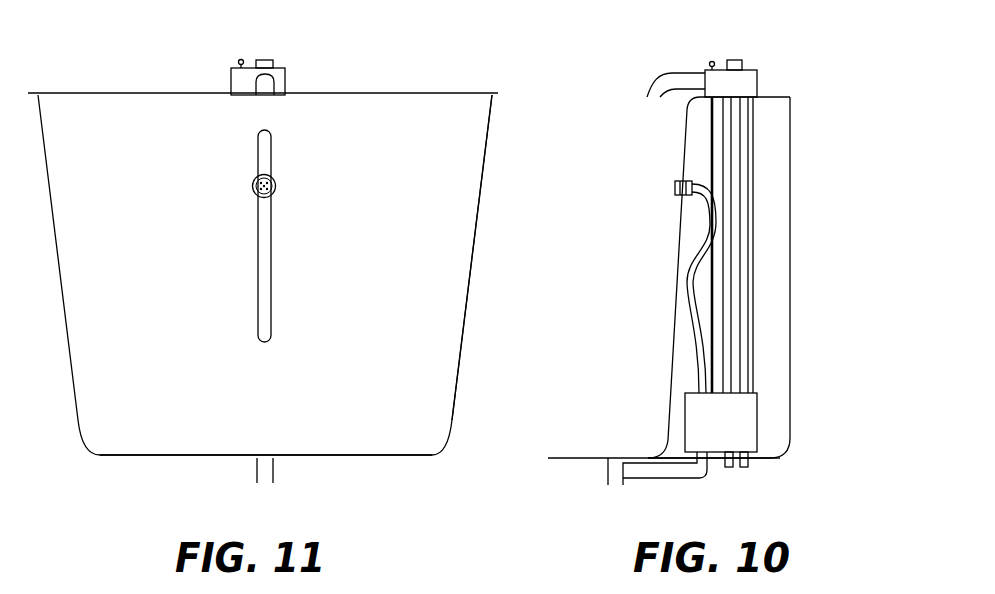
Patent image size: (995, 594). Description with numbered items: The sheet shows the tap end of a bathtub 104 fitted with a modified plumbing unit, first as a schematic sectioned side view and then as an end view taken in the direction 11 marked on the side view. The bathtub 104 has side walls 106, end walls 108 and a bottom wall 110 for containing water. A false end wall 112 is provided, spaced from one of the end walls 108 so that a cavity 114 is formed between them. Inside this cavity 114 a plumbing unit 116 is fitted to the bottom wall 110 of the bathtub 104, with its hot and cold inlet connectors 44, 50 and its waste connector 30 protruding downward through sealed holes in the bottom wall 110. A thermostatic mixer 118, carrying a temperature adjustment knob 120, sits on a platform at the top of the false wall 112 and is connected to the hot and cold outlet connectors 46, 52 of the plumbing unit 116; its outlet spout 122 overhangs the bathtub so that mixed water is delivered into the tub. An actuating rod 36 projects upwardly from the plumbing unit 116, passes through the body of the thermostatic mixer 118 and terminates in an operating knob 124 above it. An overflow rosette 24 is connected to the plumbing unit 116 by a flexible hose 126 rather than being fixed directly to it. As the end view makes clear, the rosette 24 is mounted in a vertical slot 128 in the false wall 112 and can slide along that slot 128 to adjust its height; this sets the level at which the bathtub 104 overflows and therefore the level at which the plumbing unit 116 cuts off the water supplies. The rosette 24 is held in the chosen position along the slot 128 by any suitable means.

In FIG. 10, the direction 11 is at (628, 238).
In FIG. 11, the overflow rosette 24 is at (278, 182).
In FIG. 10, the overflow rosette 24 is at (678, 180).
In FIG. 10, the waste connector 30 is at (696, 473).
In FIG. 10, the actuating rod 36 is at (712, 140).
In FIG. 10, the hot inlet connector 44 is at (729, 469).
In FIG. 10, the hot outlet connector 46 is at (728, 365).
In FIG. 10, the cold inlet connector 50 is at (748, 469).
In FIG. 10, the cold outlet connector 52 is at (740, 382).
In FIG. 11, the bathtub 104 is at (410, 498).
In FIG. 11, the side walls 106 is at (457, 358).
In FIG. 10, the end walls 108 is at (792, 292).
In FIG. 11, the bottom wall 110 is at (175, 460).
In FIG. 10, the bottom wall 110 is at (583, 455).
In FIG. 11, the false end wall 112 is at (435, 315).
In FIG. 10, the false end wall 112 is at (673, 330).
In FIG. 10, the cavity 114 is at (777, 222).
In FIG. 10, the plumbing unit 116 is at (758, 425).
In FIG. 11, the thermostatic mixer 118 is at (230, 80).
In FIG. 10, the thermostatic mixer 118 is at (760, 78).
In FIG. 11, the temperature adjustment knob 120 is at (268, 58).
In FIG. 10, the temperature adjustment knob 120 is at (742, 58).
In FIG. 11, the outlet spout 122 is at (276, 88).
In FIG. 10, the outlet spout 122 is at (655, 80).
In FIG. 11, the operating knob 124 is at (238, 58).
In FIG. 10, the operating knob 124 is at (710, 60).
In FIG. 10, the flexible hose 126 is at (688, 277).
In FIG. 11, the vertical slot 128 is at (272, 288).